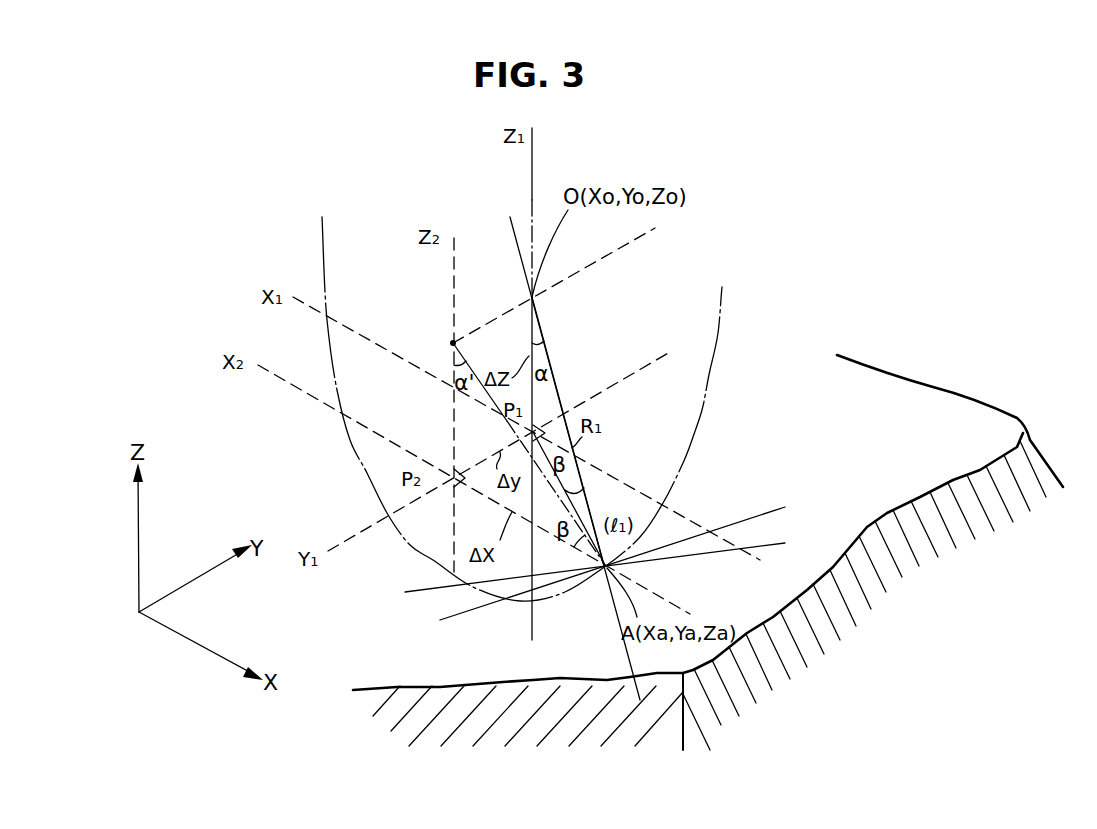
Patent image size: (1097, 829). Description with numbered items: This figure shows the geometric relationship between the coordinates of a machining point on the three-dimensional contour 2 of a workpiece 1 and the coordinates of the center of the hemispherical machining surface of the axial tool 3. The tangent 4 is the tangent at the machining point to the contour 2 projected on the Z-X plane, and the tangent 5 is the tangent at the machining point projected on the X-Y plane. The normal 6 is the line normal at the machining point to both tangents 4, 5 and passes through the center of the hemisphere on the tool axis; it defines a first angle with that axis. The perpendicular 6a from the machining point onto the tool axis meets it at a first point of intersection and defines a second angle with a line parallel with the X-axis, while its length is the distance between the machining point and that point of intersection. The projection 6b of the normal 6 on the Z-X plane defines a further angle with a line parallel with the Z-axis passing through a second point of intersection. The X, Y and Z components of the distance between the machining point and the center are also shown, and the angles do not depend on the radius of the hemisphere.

The workpiece 1 is at (963, 510).
The three-dimensional contour 2 is at (895, 378).
The axial tool 3 is at (722, 323).
The tangent 4 is at (752, 517).
The tangent 5 is at (720, 548).
The normal 6 is at (617, 620).
The perpendicular 6a is at (583, 487).
The projection of the normal 6b is at (478, 377).